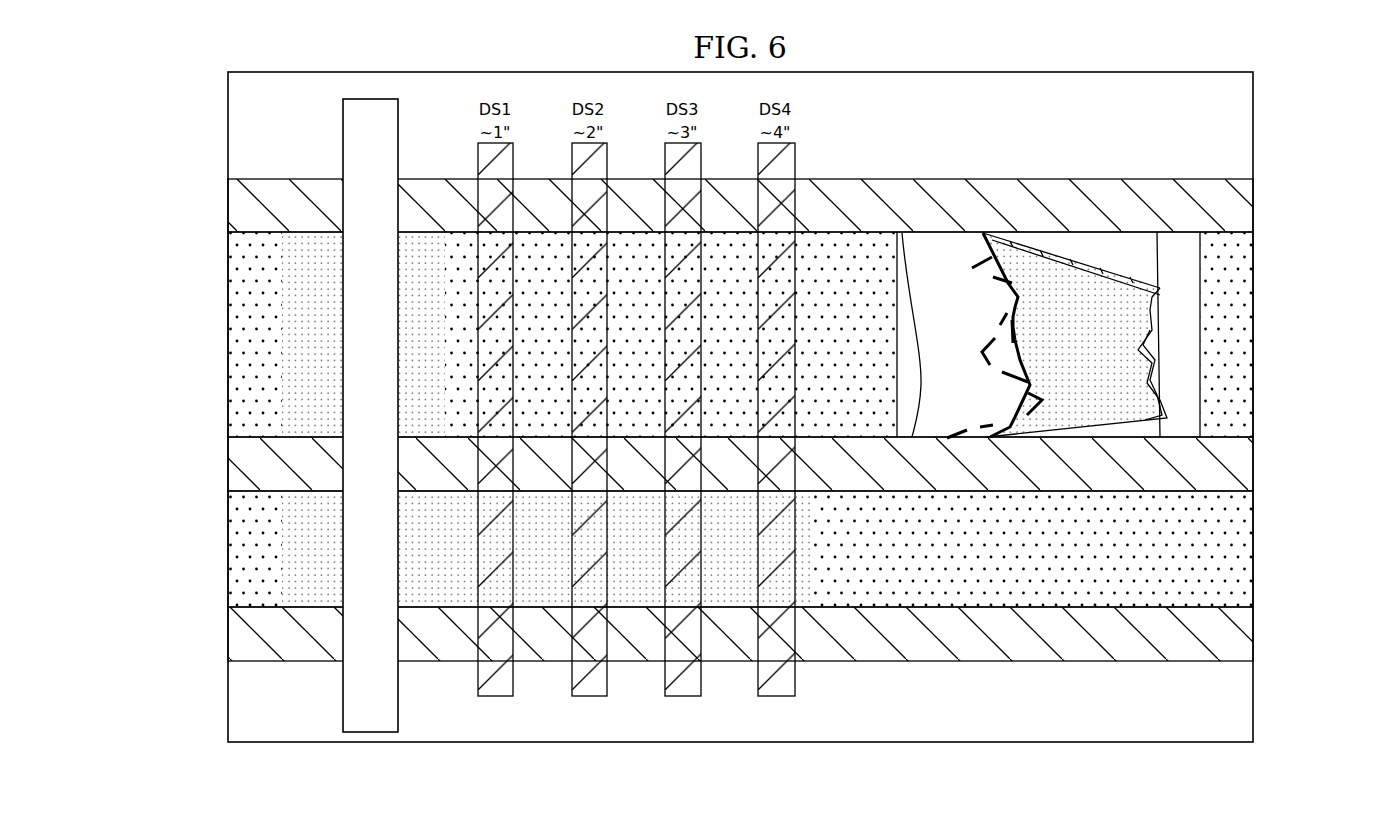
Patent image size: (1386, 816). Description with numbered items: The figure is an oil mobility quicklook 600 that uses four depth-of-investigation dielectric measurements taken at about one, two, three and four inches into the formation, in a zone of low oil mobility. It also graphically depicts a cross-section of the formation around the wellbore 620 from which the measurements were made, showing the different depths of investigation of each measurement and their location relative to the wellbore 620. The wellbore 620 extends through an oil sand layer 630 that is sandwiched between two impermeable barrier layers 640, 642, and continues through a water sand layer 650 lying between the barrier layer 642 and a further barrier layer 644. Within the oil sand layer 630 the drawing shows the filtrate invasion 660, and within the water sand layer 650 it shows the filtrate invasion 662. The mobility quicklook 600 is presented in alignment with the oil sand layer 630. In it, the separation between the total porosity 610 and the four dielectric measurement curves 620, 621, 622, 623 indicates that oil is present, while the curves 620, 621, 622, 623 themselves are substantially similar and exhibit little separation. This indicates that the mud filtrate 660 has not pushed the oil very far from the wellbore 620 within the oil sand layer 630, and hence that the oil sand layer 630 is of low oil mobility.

The mobility quicklook 600 is at (1200, 342).
The total porosity 610 is at (987, 236).
The wellbore 620 is at (370, 97).
The dielectric measurement curve 621 is at (1157, 313).
The dielectric measurement curve 622 is at (1152, 277).
The dielectric measurement curve 623 is at (1163, 397).
The oil sand layer 630 is at (237, 280).
The barrier layer 640 is at (237, 203).
The barrier layer 642 is at (236, 474).
The barrier layer 644 is at (236, 634).
The water sand layer 650 is at (236, 526).
The filtrate invasion 660 is at (293, 365).
The filtrate invasion 662 is at (293, 572).